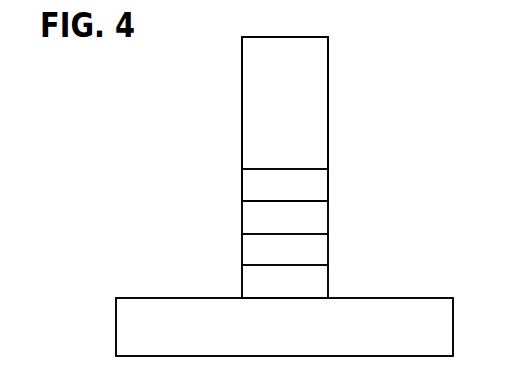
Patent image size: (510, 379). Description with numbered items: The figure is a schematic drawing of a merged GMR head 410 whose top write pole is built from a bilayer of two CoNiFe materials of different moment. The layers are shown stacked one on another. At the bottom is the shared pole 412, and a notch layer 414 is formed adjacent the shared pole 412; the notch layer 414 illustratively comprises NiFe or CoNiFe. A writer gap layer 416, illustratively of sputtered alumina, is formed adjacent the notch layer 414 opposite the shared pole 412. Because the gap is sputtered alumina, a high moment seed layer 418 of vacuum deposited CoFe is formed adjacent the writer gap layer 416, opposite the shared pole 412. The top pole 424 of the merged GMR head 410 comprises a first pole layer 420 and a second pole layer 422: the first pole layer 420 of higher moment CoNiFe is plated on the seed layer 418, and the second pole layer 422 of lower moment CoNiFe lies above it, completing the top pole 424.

The merged GMR head 410 is at (140, 120).
The shared pole 412 is at (312, 337).
The notch layer 414 is at (312, 292).
The writer gap layer 416 is at (312, 258).
The seed layer 418 is at (312, 226).
The first pole layer 420 is at (312, 194).
The second pole layer 422 is at (312, 102).
The top pole 424 is at (333, 36).